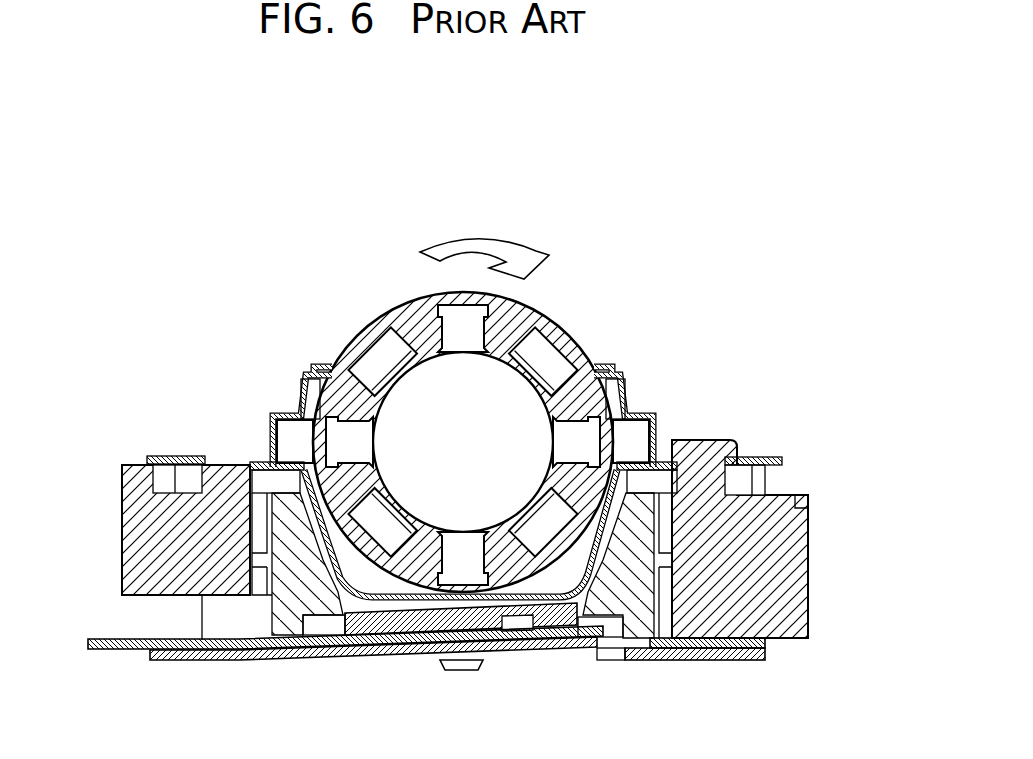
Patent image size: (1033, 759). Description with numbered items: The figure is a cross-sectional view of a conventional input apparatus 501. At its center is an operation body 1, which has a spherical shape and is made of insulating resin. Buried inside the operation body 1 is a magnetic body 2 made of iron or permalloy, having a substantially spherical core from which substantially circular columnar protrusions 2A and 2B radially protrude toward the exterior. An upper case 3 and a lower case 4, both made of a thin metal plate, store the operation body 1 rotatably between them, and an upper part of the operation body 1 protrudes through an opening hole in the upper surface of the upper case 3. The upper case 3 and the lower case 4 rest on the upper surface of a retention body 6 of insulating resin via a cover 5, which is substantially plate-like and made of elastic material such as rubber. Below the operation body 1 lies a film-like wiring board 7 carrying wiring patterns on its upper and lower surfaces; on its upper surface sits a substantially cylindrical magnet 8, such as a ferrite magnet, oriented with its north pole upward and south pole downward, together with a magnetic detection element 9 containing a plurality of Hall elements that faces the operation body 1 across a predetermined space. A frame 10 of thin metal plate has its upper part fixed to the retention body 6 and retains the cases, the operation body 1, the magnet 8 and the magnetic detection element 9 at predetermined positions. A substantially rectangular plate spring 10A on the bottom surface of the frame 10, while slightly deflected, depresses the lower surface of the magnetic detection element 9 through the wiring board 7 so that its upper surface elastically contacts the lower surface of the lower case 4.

The operation body 1 is at (402, 318).
The magnetic body 2 is at (427, 400).
The protrusion 2A is at (547, 522).
The protrusion 2B is at (586, 420).
The upper case 3 is at (303, 378).
The lower case 4 is at (335, 590).
The cover 5 is at (262, 468).
The retention body 6 is at (136, 488).
The wiring board 7 is at (733, 660).
The magnet 8 is at (275, 608).
The magnetic detection element 9 is at (352, 655).
The frame 10 is at (662, 662).
The plate spring 10A is at (509, 650).
The input apparatus 501 is at (703, 225).